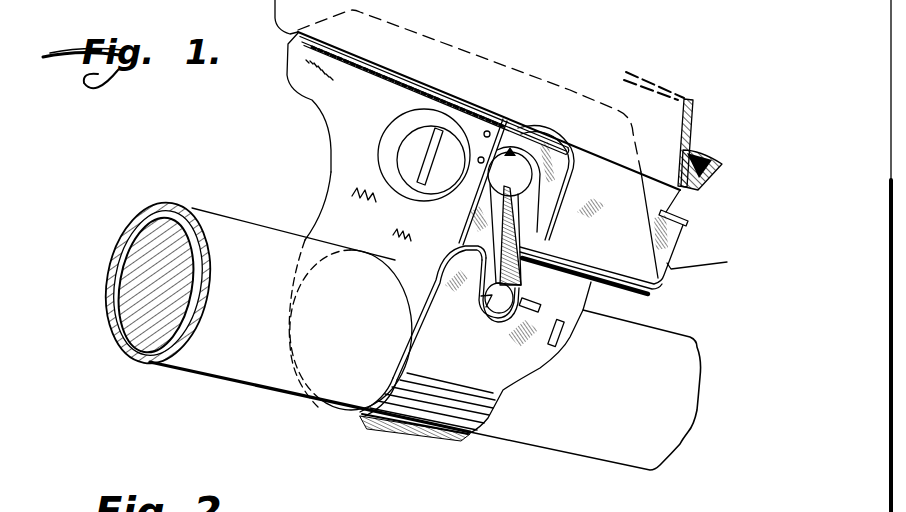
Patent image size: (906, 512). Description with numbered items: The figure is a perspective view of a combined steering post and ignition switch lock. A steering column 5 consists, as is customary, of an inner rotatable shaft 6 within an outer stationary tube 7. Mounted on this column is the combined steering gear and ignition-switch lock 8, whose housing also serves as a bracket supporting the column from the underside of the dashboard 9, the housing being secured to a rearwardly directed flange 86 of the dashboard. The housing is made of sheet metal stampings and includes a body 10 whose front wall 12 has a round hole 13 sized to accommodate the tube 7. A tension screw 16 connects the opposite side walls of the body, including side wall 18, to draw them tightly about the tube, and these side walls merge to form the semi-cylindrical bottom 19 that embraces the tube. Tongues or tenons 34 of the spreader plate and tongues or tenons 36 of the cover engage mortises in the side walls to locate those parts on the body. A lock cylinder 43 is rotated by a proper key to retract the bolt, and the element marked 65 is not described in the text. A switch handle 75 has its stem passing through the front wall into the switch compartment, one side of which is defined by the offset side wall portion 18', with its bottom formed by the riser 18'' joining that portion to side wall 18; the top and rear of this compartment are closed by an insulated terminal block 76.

The steering column 5 is at (199, 205).
The inner rotatable shaft 6 is at (146, 290).
The outer stationary tube 7 is at (247, 364).
The combined steering gear and ignition-switch lock 8 is at (313, 132).
The dashboard 9 is at (689, 137).
The body 10 is at (296, 63).
The front wall 12 is at (347, 190).
The round hole 13 is at (397, 297).
The tension screw 16 is at (476, 318).
The side wall 18 is at (585, 376).
The offset side wall portion 18' is at (606, 236).
The riser 18'' is at (625, 303).
The semi-cylindrical bottom 19 is at (398, 432).
The tongues or tenons 34 is at (526, 300).
The tongues or tenons 36 is at (562, 337).
The lock cylinder 43 is at (414, 148).
The dial 65 is at (432, 198).
The switch handle 75 is at (513, 240).
The insulated terminal block 76 is at (681, 231).
The rearwardly directed flange 86 is at (707, 184).